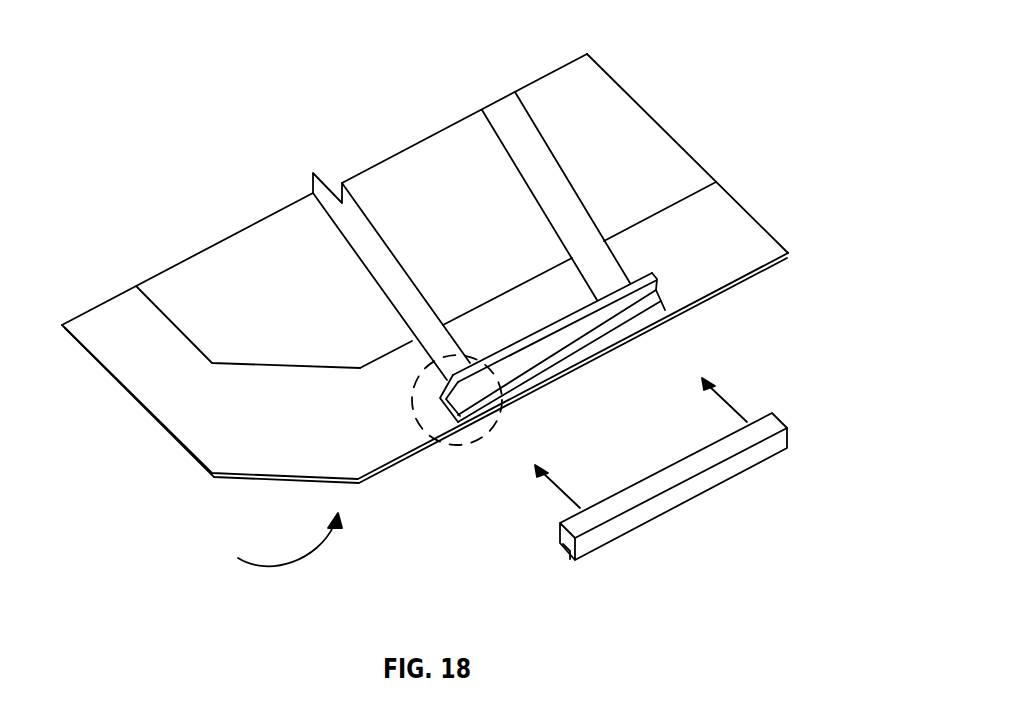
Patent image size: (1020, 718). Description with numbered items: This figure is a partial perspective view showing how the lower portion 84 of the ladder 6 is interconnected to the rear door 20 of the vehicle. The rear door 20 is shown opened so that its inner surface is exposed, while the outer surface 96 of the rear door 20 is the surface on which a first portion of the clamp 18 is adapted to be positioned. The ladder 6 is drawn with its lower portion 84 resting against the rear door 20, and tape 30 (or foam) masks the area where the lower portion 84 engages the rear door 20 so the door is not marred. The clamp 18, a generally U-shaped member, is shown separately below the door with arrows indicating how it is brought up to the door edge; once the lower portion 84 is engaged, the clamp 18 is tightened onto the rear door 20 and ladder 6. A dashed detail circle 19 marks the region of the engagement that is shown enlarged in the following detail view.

The ladder 6 is at (509, 117).
The outer surface 96 is at (632, 143).
The rear door 20 is at (202, 288).
The lower portion 84 is at (633, 317).
The tape 30 is at (587, 363).
The detail circle (FIG. 19) 19 is at (460, 444).
The clamp 18 is at (707, 483).